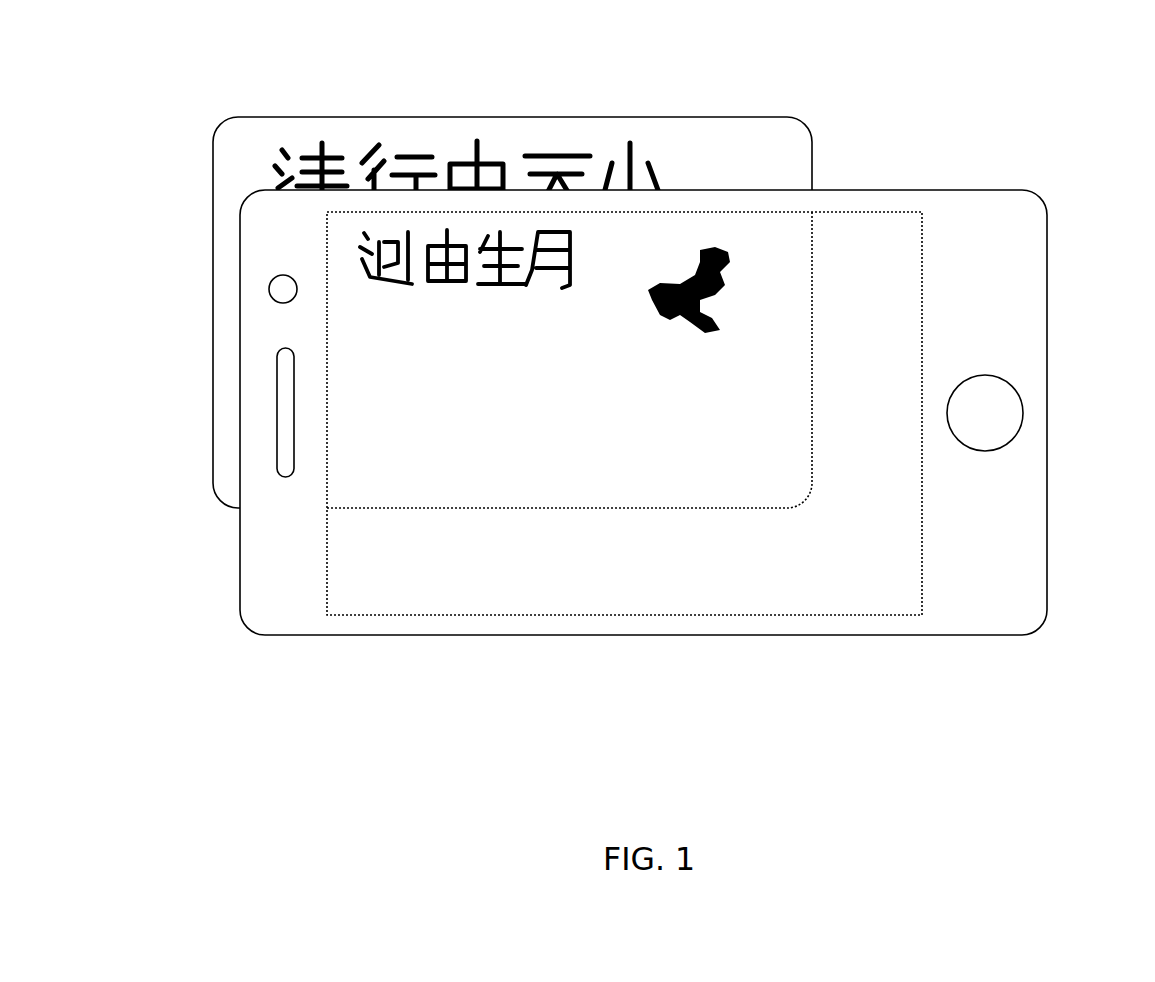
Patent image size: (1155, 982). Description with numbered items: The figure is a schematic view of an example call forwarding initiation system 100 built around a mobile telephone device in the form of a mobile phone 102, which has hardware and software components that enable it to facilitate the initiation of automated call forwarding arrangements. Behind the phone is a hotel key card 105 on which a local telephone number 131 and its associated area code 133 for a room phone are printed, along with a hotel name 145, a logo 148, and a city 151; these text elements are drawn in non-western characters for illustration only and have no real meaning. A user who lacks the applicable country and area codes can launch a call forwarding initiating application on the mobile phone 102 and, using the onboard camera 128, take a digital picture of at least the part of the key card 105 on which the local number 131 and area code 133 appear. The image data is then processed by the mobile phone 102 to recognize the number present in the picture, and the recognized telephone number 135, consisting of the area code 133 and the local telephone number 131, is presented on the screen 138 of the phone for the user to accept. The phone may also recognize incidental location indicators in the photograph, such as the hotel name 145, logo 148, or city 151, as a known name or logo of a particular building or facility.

The call forwarding initiation system 100 is at (910, 133).
The mobile phone 102 is at (992, 275).
The hotel key card 105 is at (770, 163).
The onboard camera 128 is at (282, 270).
The local telephone number 131 is at (530, 486).
The area code 133 is at (467, 486).
The recognized telephone number 135 is at (605, 470).
The screen 138 is at (897, 254).
The hotel name 145 is at (477, 148).
The logo 148 is at (730, 305).
The city 151 is at (600, 328).